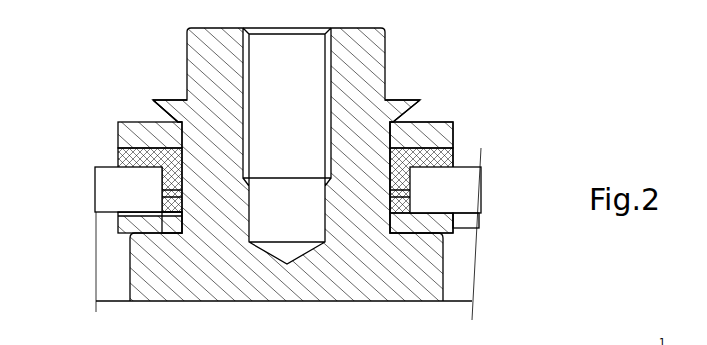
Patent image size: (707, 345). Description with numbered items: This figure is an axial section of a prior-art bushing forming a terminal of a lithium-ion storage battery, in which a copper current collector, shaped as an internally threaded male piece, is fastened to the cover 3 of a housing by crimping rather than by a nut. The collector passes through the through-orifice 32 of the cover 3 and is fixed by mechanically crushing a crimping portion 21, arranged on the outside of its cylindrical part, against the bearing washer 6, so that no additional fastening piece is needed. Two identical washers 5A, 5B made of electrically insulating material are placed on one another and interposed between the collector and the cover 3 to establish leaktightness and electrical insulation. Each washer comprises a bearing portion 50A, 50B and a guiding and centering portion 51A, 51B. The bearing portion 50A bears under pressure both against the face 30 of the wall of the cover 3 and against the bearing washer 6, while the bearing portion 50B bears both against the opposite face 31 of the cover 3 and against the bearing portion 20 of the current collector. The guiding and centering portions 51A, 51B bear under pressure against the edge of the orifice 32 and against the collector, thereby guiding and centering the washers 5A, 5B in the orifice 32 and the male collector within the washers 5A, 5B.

The bearing portion of the current collector 20 is at (415, 234).
The crimping portion 21 is at (175, 107).
The through-orifice 32 is at (160, 120).
The bearing portion 50A is at (118, 150).
The bearing portion 50B is at (127, 222).
The guiding and centering portion 51A is at (163, 177).
The guiding and centering portion 51B is at (172, 234).
The insulating washer 5A is at (448, 122).
The insulating washer 5B is at (447, 240).
The bearing washer 6 is at (427, 122).
The cover 3 is at (457, 177).
The face of the wall of the cover 30 is at (483, 150).
The opposite face of the cover 31 is at (475, 245).